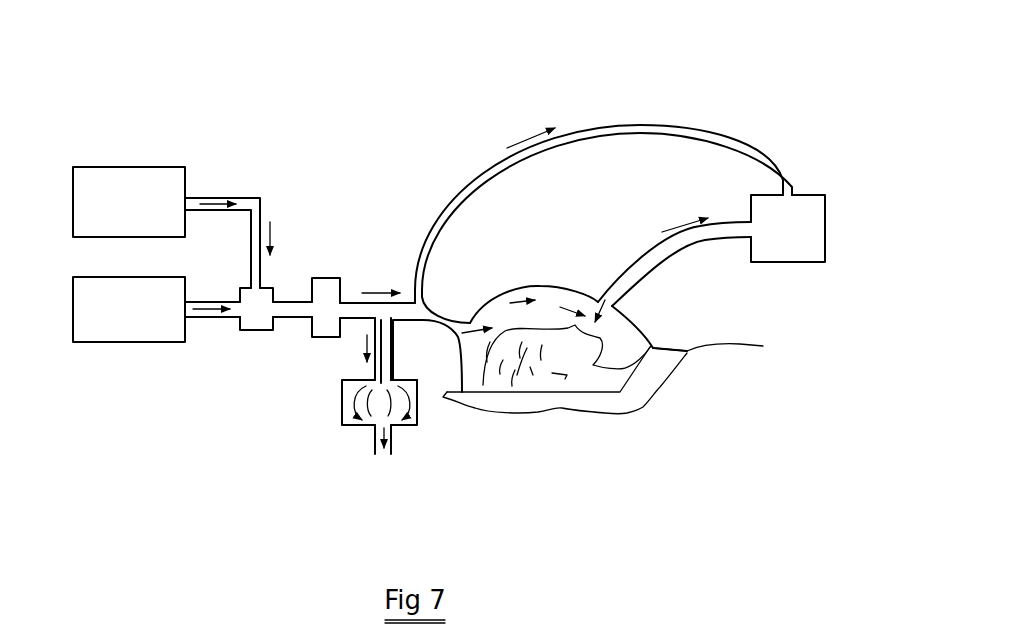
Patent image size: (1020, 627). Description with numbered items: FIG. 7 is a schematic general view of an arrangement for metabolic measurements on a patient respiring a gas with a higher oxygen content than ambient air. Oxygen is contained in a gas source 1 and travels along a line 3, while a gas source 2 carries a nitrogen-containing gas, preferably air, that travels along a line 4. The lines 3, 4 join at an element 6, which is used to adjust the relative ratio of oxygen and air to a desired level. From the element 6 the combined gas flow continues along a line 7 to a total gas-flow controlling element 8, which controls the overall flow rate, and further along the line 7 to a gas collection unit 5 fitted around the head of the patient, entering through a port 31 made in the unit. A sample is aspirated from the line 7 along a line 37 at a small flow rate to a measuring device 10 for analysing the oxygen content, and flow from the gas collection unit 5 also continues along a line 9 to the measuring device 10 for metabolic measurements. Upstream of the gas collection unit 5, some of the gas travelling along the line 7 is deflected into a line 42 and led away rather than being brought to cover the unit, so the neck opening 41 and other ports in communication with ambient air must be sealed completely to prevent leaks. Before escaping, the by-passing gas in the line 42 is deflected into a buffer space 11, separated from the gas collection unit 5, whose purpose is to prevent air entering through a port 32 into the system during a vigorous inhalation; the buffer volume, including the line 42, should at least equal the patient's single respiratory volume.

The gas source 1 is at (134, 185).
The gas source 2 is at (148, 320).
The line 3 is at (215, 207).
The line 4 is at (217, 308).
The gas collection unit 5 is at (546, 290).
The element 6 is at (258, 318).
The line 7 is at (289, 310).
The total gas-flow controlling element 8 is at (325, 290).
The line 9 is at (720, 235).
The measuring device 10 is at (806, 212).
The buffer space 11 is at (360, 422).
The port 31 is at (467, 330).
The port 32 is at (383, 455).
The line 37 is at (620, 125).
The neck opening 41 is at (664, 350).
The line 42 is at (377, 368).